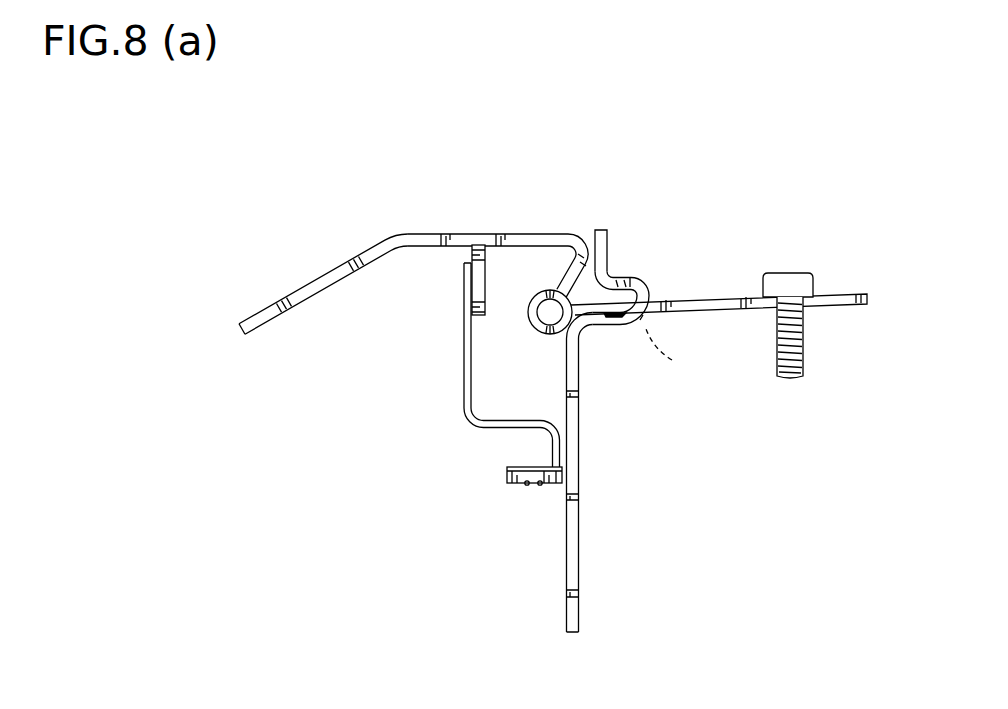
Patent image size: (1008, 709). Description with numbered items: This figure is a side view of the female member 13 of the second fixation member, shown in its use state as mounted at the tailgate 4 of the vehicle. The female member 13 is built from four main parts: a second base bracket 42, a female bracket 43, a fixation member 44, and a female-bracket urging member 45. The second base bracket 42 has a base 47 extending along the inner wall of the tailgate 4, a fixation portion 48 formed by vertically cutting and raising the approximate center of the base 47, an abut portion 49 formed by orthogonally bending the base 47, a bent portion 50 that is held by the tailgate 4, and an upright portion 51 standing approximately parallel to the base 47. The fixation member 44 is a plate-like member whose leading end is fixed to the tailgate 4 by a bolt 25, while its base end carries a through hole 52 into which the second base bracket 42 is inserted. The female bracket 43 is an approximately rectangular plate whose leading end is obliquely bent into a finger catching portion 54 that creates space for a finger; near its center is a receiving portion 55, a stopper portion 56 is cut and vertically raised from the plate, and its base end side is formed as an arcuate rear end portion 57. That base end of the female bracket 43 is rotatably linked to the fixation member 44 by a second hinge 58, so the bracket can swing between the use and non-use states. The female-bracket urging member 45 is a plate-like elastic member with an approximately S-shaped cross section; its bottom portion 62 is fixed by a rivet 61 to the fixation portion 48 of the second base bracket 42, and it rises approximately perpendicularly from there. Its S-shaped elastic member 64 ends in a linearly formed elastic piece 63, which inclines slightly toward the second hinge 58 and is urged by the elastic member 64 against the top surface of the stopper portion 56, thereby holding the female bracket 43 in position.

The female member 13 is at (370, 238).
The female bracket 43 is at (319, 266).
The finger catching portion 54 is at (388, 238).
The receiving portion 55 is at (481, 243).
The stopper portion 56 is at (484, 270).
The rear end portion 57 is at (588, 218).
The upright portion 51 is at (603, 316).
The abut portion 49 is at (612, 310).
The bent portion 50 is at (644, 288).
The fixation member 44 is at (707, 296).
The bolt 25 is at (800, 272).
The second hinge 58 is at (550, 312).
The female-bracket urging member 45 is at (462, 328).
The elastic piece 63 is at (534, 369).
The elastic member 64 is at (518, 421).
The bottom portion 62 is at (542, 460).
The rivet 61 is at (506, 470).
The fixation portion 48 is at (527, 477).
The second base bracket 42 is at (581, 380).
The base 47 is at (572, 535).
The through hole 52 is at (679, 353).
The tailgate 4 is at (675, 385).